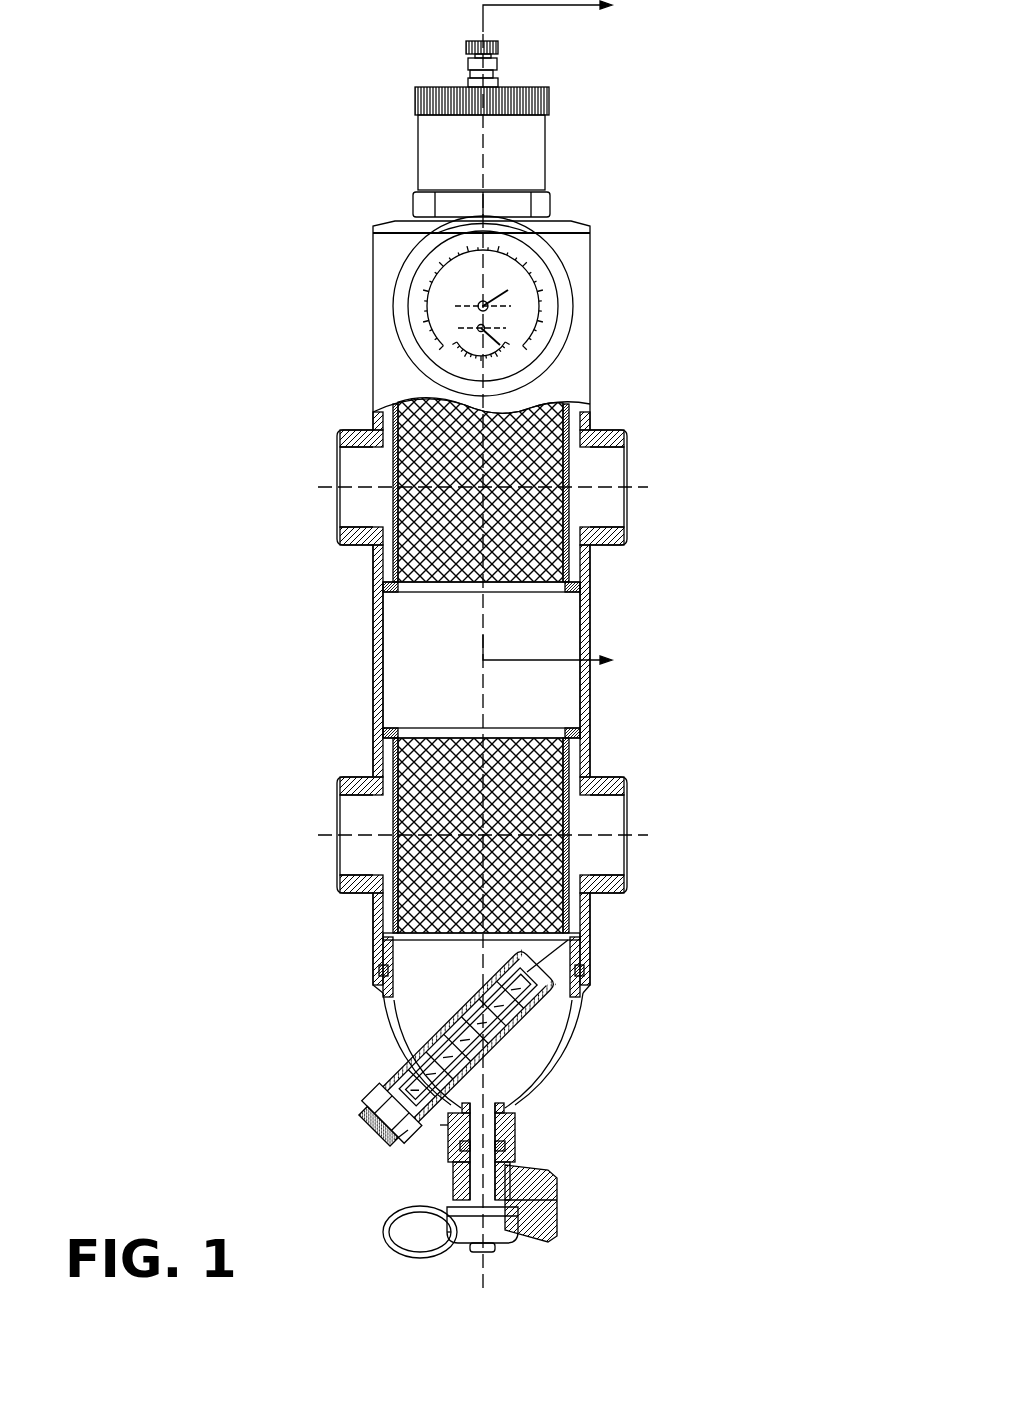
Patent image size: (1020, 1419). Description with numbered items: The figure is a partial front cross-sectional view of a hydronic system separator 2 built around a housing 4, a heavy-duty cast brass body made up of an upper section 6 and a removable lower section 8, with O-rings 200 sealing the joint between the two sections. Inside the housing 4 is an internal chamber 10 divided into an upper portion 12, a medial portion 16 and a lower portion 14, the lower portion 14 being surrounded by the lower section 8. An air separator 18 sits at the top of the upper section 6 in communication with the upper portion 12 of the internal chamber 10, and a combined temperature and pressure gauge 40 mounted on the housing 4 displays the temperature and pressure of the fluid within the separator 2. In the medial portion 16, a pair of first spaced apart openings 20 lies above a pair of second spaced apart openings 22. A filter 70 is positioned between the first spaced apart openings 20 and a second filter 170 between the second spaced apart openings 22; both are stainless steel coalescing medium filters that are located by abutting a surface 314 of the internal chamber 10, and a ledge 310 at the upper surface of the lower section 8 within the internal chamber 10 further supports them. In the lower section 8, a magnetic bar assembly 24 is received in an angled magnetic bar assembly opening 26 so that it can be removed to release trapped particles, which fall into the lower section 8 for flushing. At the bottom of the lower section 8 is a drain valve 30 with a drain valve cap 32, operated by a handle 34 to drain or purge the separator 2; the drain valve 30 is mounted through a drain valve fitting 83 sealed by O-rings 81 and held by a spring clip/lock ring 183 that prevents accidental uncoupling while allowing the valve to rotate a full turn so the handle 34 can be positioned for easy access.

The hydronic system separator 2 is at (308, 160).
The housing 4 is at (372, 318).
The upper section 6 is at (590, 585).
The lower section 8 is at (383, 1005).
The internal chamber 10 is at (430, 625).
The upper portion 12 is at (565, 422).
The lower portion 14 is at (550, 1008).
The medial portion 16 is at (532, 608).
The air separator 18 is at (515, 148).
The first spaced apart openings 20 is at (353, 465).
The second spaced apart openings 22 is at (357, 847).
The magnetic bar assembly 24 is at (408, 1130).
The magnetic bar assembly opening 26 is at (440, 1125).
The drain valve 30 is at (507, 1243).
The drain valve cap 32 is at (445, 1252).
The handle 34 is at (552, 1237).
The gauge 40 is at (532, 322).
The filter 70 is at (513, 507).
The O-rings 81 is at (500, 1117).
The drain valve fitting 83 is at (507, 1163).
The filter 170 is at (533, 790).
The spring clip/lock ring 183 is at (520, 1143).
The O-rings 200 is at (590, 965).
The ledge 310 is at (385, 948).
The surface 314 is at (585, 565).